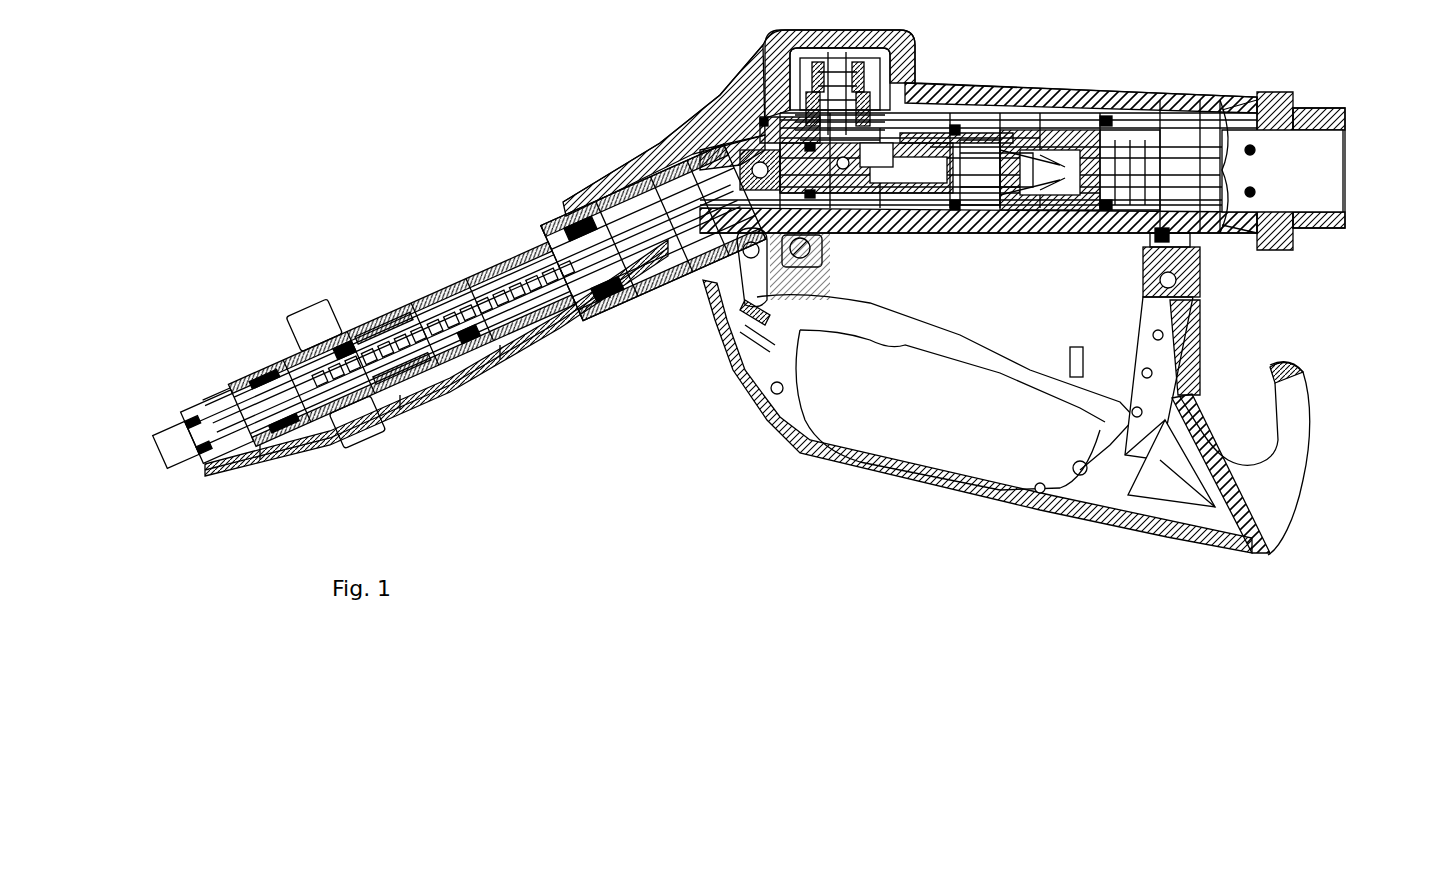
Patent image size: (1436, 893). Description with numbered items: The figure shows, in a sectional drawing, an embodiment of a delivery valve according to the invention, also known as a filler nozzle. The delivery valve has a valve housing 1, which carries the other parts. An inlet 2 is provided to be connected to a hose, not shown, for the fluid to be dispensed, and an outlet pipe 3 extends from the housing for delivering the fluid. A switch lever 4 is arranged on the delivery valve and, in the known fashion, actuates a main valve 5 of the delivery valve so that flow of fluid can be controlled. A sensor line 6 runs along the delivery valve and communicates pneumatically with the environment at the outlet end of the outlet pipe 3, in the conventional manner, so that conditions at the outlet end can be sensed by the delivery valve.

The valve housing 1 is at (960, 97).
The inlet 2 is at (1308, 148).
The outlet pipe 3 is at (490, 245).
The switch lever 4 is at (1000, 355).
The main valve 5 is at (1085, 125).
The sensor line 6 is at (541, 295).